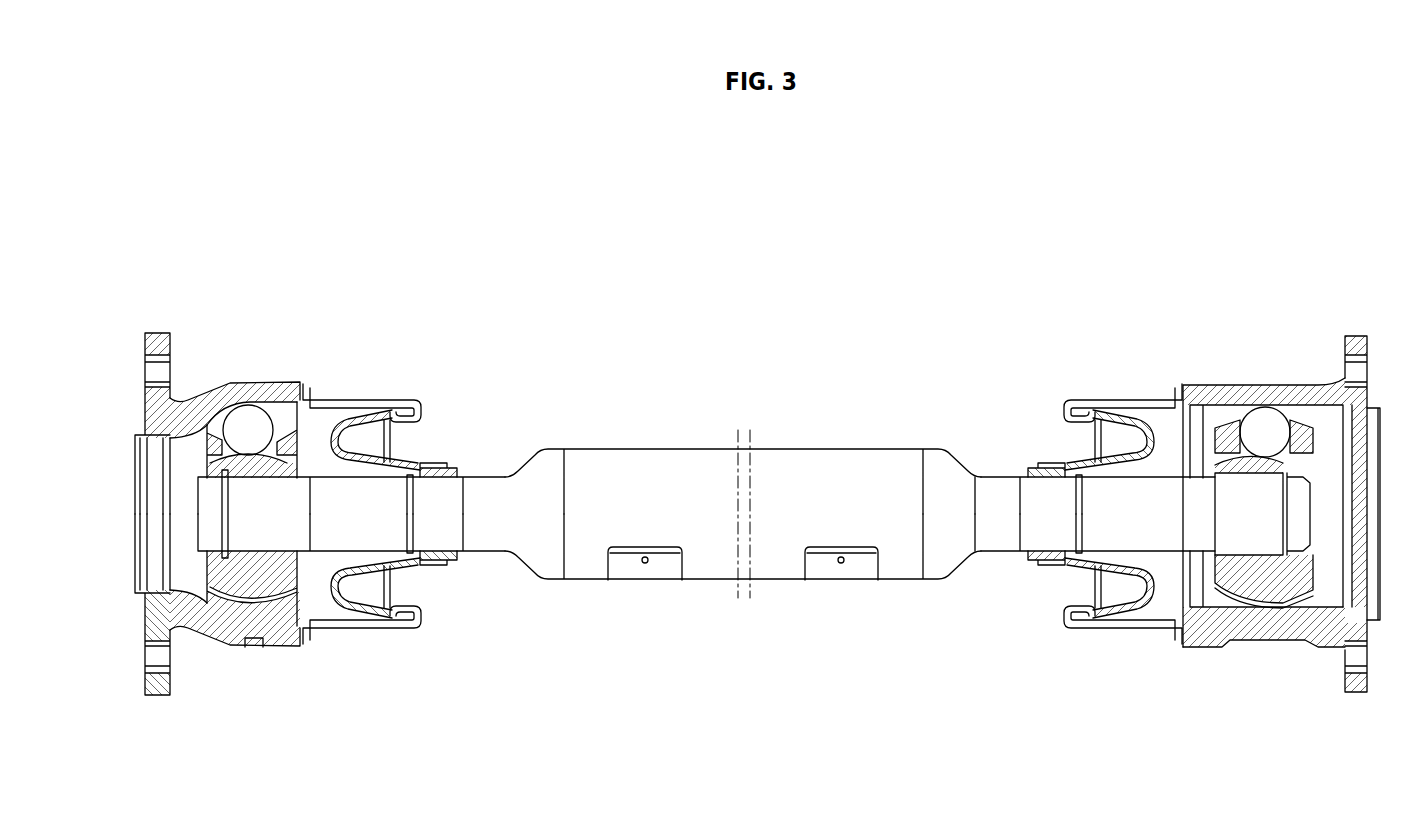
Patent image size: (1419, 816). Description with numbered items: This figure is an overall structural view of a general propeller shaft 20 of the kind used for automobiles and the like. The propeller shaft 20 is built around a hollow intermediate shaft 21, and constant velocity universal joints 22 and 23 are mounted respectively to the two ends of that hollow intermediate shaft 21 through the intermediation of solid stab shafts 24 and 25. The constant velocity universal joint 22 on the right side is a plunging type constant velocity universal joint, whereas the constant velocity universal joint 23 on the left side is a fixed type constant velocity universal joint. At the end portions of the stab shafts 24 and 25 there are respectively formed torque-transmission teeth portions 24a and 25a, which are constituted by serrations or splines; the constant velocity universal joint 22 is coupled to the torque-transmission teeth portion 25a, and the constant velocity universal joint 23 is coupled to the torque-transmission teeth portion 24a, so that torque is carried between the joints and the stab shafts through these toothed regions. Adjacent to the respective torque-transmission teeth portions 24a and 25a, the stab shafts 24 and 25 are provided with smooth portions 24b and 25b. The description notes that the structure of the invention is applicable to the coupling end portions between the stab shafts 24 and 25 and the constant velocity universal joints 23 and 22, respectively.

The propeller shaft 20 is at (704, 365).
The hollow intermediate shaft 21 is at (823, 462).
The constant velocity universal joint 22 is at (1275, 384).
The constant velocity universal joint 23 is at (268, 378).
The stab shaft 24 is at (485, 492).
The torque-transmission teeth portion 24a is at (262, 520).
The smooth portion 24b is at (362, 525).
The stab shaft 25 is at (1000, 487).
The torque-transmission teeth portion 25a is at (1248, 525).
The smooth portion 25b is at (1122, 530).